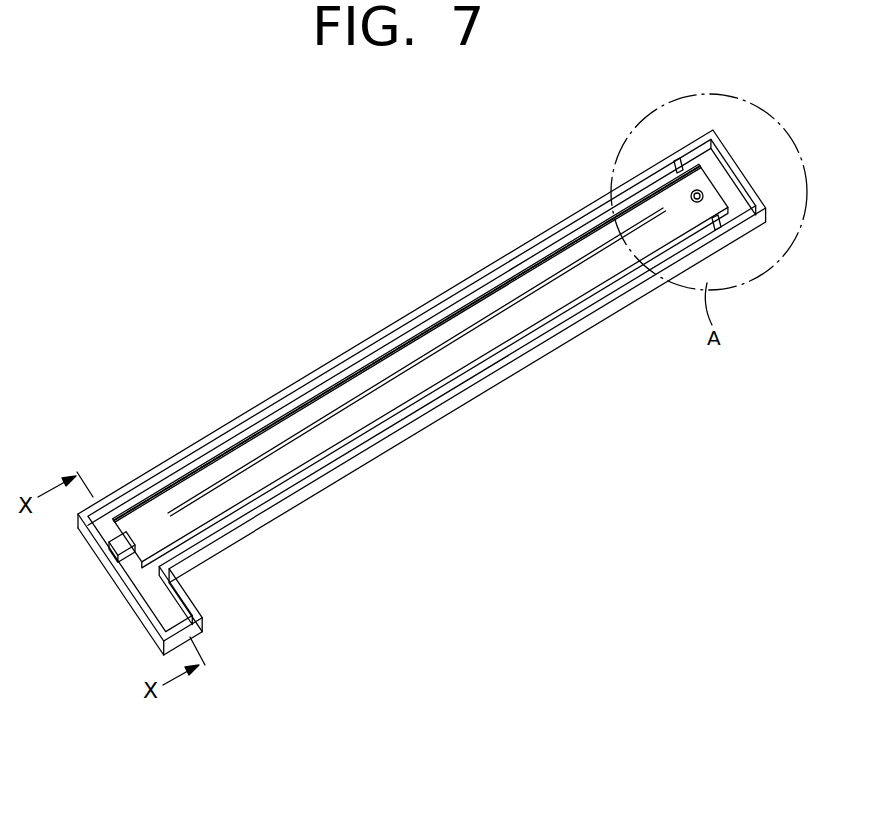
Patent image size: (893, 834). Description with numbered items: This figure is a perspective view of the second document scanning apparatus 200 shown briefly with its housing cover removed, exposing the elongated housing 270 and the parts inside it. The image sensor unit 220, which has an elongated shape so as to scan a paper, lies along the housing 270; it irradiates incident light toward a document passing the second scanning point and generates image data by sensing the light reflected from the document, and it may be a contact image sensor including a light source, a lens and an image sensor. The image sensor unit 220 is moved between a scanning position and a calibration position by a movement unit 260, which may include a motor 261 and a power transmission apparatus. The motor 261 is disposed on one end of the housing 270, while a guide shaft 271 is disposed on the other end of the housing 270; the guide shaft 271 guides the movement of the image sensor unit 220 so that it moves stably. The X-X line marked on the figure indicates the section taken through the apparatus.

The second document scanning apparatus 200 is at (328, 232).
The image sensor unit 220 is at (272, 433).
The movement unit 260 is at (124, 552).
The motor 261 is at (167, 610).
The housing 270 is at (275, 510).
The guide shaft 271 is at (677, 162).